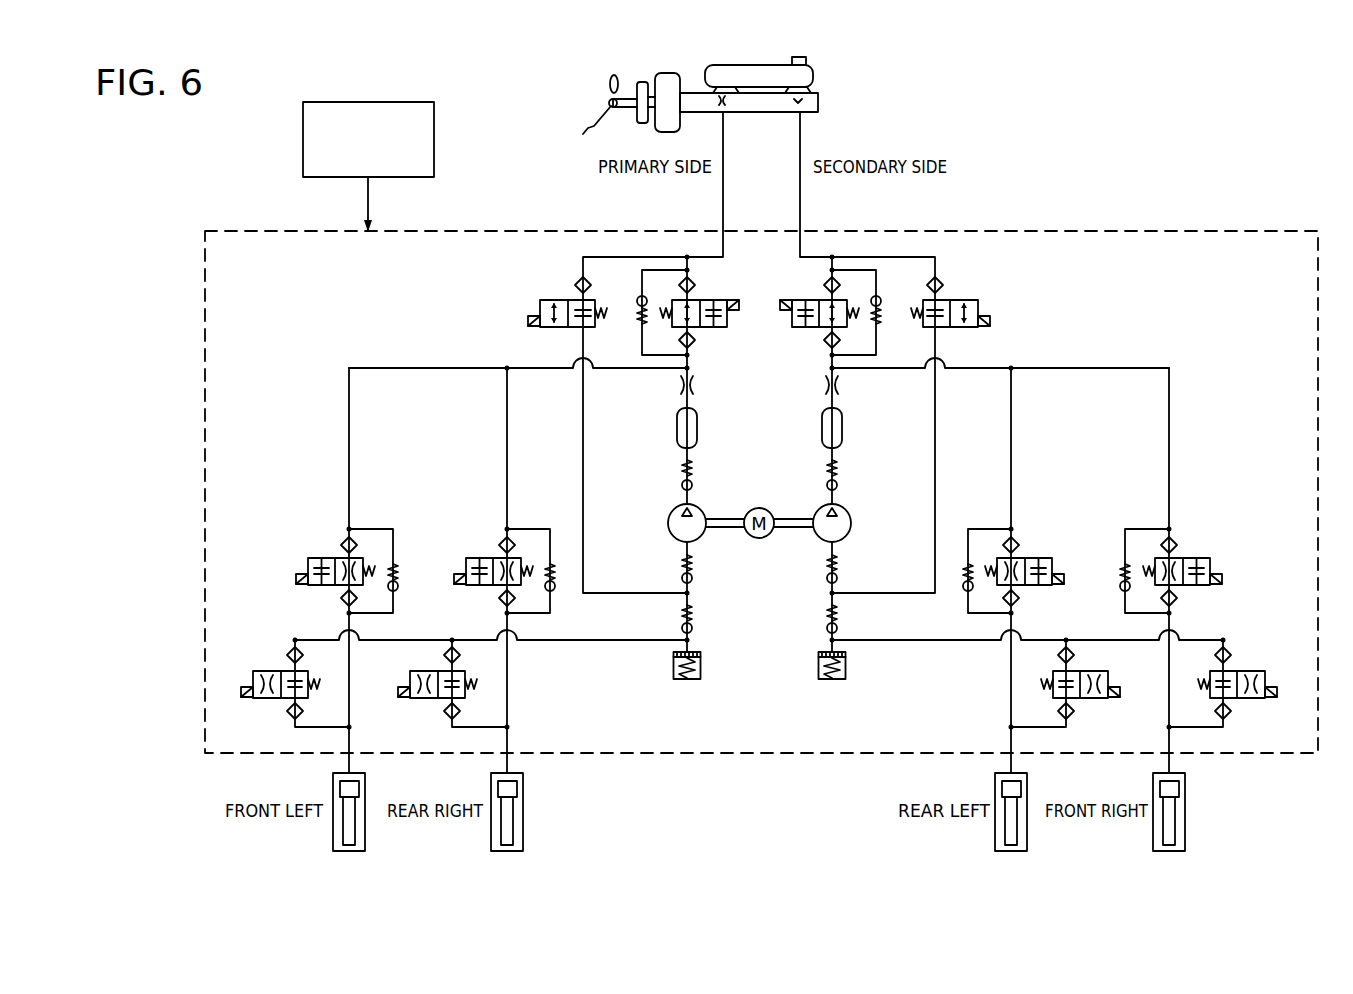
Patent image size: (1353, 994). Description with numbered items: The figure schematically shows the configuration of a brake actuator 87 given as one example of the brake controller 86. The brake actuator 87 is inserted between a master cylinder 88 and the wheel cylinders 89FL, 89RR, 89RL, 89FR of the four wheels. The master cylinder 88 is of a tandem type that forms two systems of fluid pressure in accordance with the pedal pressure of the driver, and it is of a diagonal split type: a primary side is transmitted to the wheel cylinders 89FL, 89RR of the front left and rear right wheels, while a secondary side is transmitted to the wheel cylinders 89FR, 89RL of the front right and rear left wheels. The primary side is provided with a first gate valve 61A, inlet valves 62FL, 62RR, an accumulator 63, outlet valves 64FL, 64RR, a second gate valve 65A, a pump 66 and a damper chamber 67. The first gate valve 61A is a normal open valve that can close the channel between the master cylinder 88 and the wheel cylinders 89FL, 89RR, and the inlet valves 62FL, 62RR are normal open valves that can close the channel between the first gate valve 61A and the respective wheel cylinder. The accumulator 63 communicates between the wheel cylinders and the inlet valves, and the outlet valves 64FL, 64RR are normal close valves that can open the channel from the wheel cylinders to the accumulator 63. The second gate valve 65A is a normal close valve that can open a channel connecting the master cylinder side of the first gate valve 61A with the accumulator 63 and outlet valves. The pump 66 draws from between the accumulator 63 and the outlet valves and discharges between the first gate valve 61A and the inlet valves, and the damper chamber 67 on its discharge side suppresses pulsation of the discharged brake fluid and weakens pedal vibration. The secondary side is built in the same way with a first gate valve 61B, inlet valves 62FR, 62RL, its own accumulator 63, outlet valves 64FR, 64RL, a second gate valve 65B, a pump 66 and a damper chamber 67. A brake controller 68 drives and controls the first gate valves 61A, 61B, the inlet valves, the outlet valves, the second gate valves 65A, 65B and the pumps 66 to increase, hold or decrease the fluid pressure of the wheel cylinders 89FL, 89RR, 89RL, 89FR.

The brake controller 68 is at (303, 143).
The master cylinder 88 is at (818, 103).
The brake controller 86 is at (1087, 113).
The brake actuator 87 is at (1116, 232).
The first gate valve 61A is at (707, 298).
The first gate valve 61B is at (800, 298).
The second gate valve 65A is at (547, 299).
The second gate valve 65B is at (973, 299).
The damper chamber 67 is at (675, 433).
The pump 66 is at (672, 511).
The accumulator 63 is at (686, 679).
The inlet valve 62FL is at (317, 558).
The inlet valve 62RR is at (475, 558).
The inlet valve 62RL is at (1047, 558).
The inlet valve 62FR is at (1205, 558).
The outlet valve 64FL is at (260, 670).
The outlet valve 64RR is at (467, 693).
The outlet valve 64RL is at (1052, 693).
The outlet valve 64FR is at (1258, 670).
The wheel cylinder 89FL is at (365, 848).
The wheel cylinder 89RR is at (523, 848).
The wheel cylinder 89RL is at (1027, 848).
The wheel cylinder 89FR is at (1185, 848).